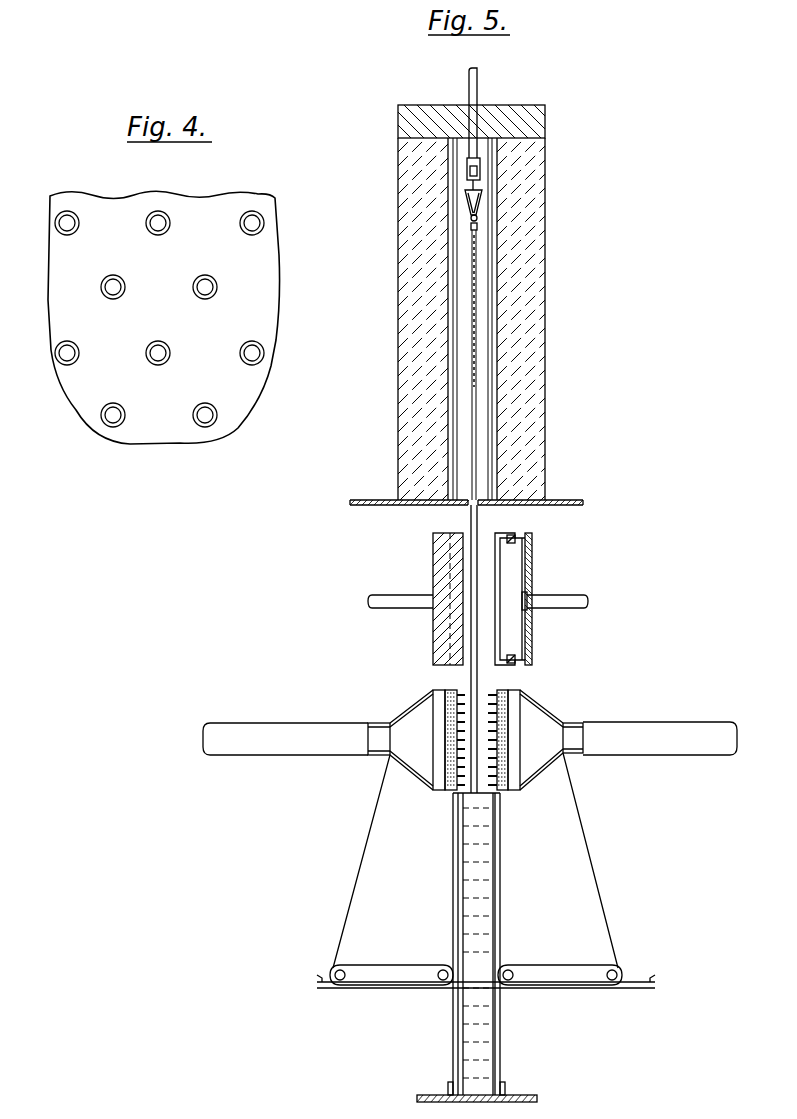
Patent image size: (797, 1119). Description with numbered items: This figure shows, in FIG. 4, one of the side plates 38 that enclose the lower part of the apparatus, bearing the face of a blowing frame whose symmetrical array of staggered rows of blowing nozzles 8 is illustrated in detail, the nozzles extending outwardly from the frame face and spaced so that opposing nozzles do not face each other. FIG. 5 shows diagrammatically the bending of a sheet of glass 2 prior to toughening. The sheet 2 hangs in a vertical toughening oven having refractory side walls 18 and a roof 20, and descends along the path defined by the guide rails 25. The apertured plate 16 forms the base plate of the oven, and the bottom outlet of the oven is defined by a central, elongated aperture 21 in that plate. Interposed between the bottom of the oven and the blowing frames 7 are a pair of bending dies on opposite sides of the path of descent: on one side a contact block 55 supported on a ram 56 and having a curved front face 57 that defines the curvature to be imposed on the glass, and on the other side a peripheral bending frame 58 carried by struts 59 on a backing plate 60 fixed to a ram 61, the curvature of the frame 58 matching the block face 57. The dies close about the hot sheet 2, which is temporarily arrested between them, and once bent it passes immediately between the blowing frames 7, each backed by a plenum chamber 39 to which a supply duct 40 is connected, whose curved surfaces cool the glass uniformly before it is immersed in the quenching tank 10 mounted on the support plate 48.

In FIG. 4, the side plates 38 is at (207, 215).
In FIG. 4, the blowing nozzles 8 is at (264, 212).
In FIG. 5, the blowing nozzles 8 is at (465, 684).
In FIG. 5, the guide rails 25 is at (478, 91).
In FIG. 5, the roof 20 is at (531, 127).
In FIG. 5, the side walls 18 is at (531, 246).
In FIG. 5, the sheet of glass 2 is at (478, 373).
In FIG. 5, the apertured plate 16 is at (559, 500).
In FIG. 5, the central elongated aperture 21 is at (462, 506).
In FIG. 5, the contact block 55 is at (443, 628).
In FIG. 5, the ram 56 is at (393, 602).
In FIG. 5, the curved front face 57 is at (457, 562).
In FIG. 5, the peripheral bending frame 58 is at (500, 533).
In FIG. 5, the struts 59 is at (518, 550).
In FIG. 5, the backing plate 60 is at (532, 580).
In FIG. 5, the ram 61 is at (559, 604).
In FIG. 5, the blowing frames 7 is at (513, 708).
In FIG. 5, the plenum chamber 39 is at (407, 750).
In FIG. 5, the supply duct 40 is at (258, 733).
In FIG. 5, the tank 10 is at (497, 918).
In FIG. 5, the support plate 48 is at (520, 1095).